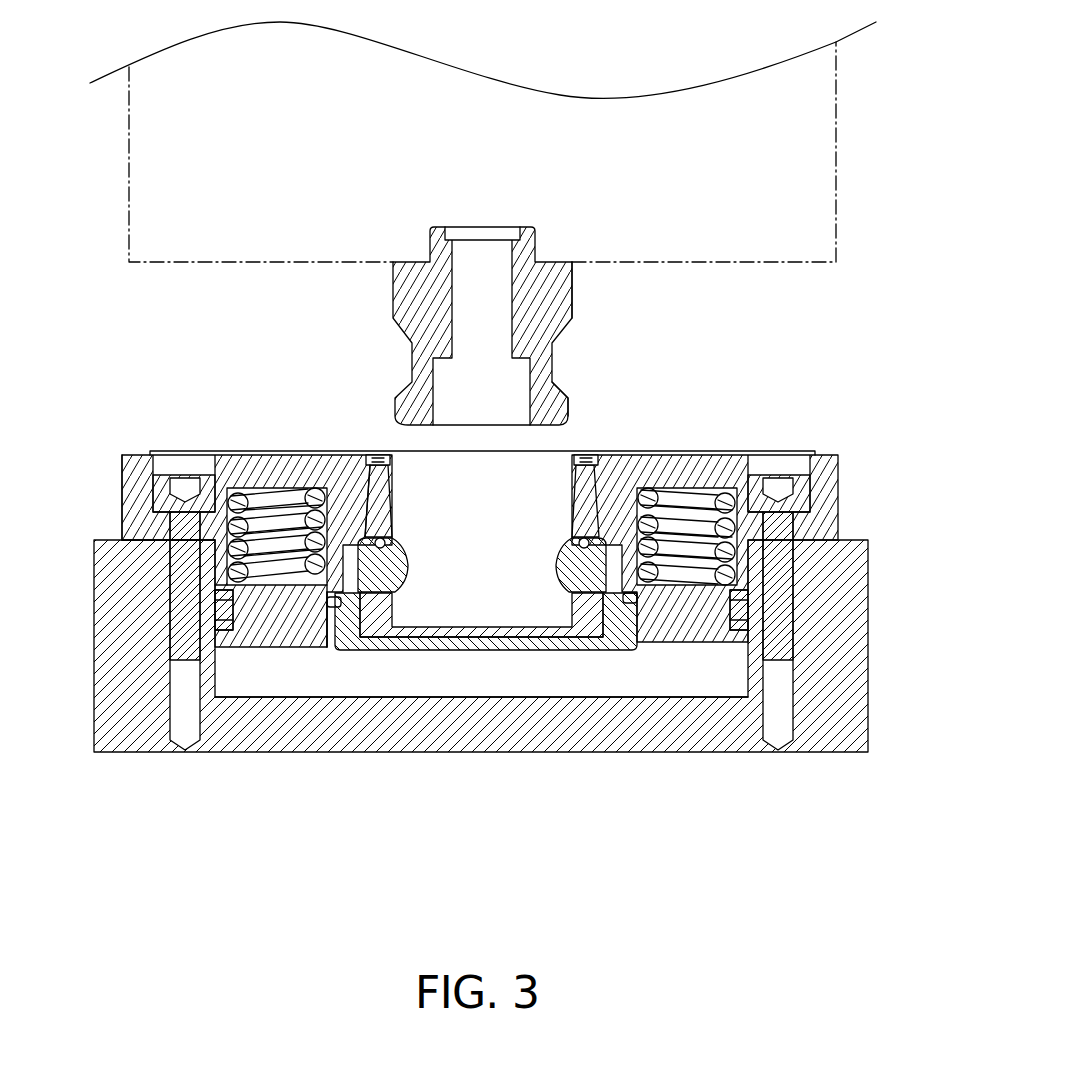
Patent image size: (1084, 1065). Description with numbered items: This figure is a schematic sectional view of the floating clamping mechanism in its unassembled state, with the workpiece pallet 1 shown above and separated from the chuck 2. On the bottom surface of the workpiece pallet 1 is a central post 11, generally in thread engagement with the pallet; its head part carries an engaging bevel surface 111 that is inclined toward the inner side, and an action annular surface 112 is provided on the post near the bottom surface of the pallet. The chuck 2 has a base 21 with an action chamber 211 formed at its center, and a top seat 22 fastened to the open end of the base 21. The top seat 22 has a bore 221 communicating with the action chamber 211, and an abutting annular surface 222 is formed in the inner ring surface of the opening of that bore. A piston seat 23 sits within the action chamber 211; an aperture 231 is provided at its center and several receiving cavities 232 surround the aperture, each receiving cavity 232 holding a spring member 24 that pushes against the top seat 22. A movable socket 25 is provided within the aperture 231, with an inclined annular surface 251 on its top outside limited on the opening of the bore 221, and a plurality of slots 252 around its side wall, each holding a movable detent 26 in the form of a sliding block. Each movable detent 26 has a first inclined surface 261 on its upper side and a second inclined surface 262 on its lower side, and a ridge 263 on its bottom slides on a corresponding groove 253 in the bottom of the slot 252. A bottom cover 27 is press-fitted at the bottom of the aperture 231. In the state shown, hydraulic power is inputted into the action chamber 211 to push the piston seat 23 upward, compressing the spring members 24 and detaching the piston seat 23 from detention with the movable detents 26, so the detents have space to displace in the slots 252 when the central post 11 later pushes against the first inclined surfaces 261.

The workpiece pallet 1 is at (836, 112).
The central post 11 is at (412, 358).
The engaging bevel surface 111 is at (556, 388).
The action annular surface 112 is at (573, 297).
The chuck 2 is at (128, 452).
The base 21 is at (598, 735).
The action chamber 211 is at (540, 676).
The top seat 22 is at (724, 462).
The bore 221 is at (532, 450).
The abutting annular surface 222 is at (287, 460).
The piston seat 23 is at (272, 617).
The aperture 231 is at (328, 650).
The receiving cavity 232 is at (213, 540).
The spring member 24 is at (230, 565).
The movable socket 25 is at (387, 455).
The inclined annular surface 251 is at (362, 487).
The slot 252 is at (388, 545).
The groove 253 is at (482, 737).
The movable detent 26 is at (396, 582).
The first inclined surface 261 is at (577, 542).
The second inclined surface 262 is at (558, 588).
The ridge 263 is at (372, 587).
The bottom cover 27 is at (620, 638).